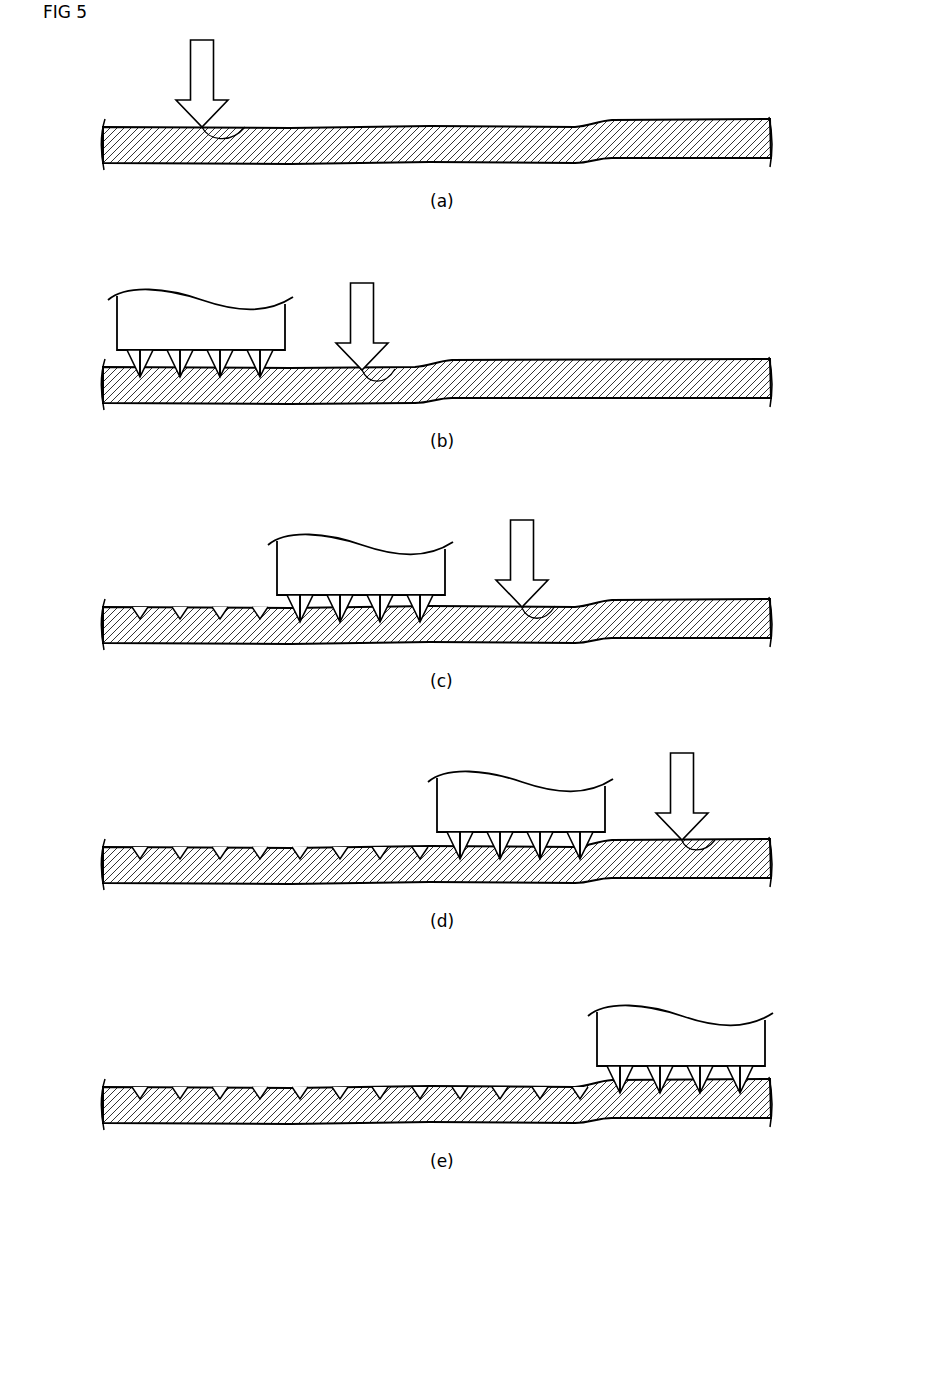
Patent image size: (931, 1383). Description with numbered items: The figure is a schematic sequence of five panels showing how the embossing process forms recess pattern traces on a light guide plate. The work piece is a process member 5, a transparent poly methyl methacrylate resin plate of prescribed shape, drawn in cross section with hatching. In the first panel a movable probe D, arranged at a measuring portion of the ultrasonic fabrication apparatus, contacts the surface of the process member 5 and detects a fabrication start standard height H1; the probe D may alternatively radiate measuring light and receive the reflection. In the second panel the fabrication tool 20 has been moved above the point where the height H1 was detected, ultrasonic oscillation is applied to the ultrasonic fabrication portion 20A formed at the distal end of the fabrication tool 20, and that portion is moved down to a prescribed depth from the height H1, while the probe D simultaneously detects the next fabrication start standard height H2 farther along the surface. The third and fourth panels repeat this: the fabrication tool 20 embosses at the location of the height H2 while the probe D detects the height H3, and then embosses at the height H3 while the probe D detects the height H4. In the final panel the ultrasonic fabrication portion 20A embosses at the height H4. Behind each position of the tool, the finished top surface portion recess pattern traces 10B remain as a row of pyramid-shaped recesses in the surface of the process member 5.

The process member 5 is at (740, 125).
The top surface portion recess pattern traces 10B is at (178, 605).
The fabrication tool 20 is at (200, 322).
The ultrasonic fabrication portion 20A is at (130, 360).
The probe D is at (203, 52).
The fabrication start standard height H1 is at (232, 127).
The fabrication start standard height H2 is at (390, 375).
The fabrication start standard height H3 is at (550, 615).
The fabrication start standard height H4 is at (708, 838).